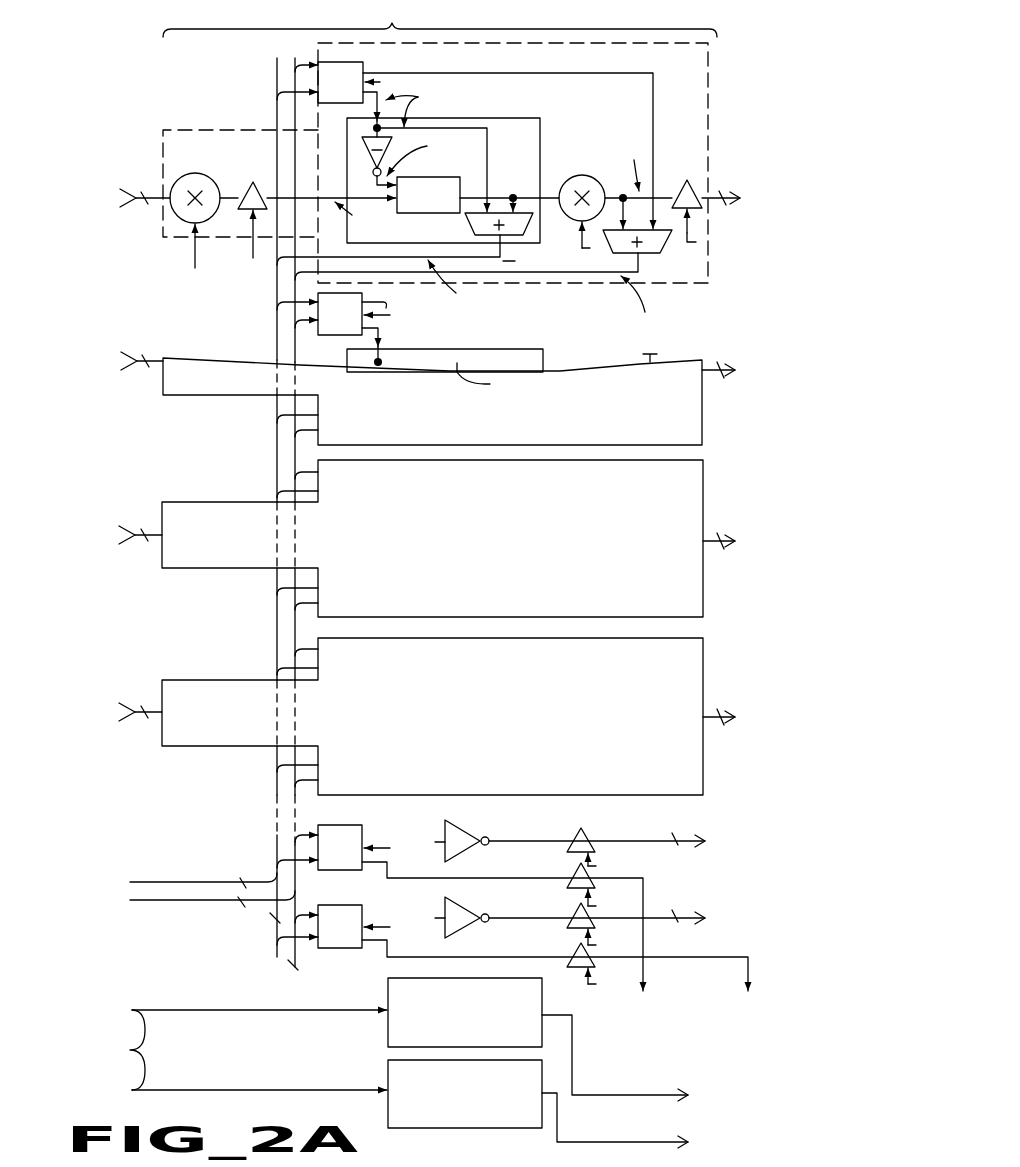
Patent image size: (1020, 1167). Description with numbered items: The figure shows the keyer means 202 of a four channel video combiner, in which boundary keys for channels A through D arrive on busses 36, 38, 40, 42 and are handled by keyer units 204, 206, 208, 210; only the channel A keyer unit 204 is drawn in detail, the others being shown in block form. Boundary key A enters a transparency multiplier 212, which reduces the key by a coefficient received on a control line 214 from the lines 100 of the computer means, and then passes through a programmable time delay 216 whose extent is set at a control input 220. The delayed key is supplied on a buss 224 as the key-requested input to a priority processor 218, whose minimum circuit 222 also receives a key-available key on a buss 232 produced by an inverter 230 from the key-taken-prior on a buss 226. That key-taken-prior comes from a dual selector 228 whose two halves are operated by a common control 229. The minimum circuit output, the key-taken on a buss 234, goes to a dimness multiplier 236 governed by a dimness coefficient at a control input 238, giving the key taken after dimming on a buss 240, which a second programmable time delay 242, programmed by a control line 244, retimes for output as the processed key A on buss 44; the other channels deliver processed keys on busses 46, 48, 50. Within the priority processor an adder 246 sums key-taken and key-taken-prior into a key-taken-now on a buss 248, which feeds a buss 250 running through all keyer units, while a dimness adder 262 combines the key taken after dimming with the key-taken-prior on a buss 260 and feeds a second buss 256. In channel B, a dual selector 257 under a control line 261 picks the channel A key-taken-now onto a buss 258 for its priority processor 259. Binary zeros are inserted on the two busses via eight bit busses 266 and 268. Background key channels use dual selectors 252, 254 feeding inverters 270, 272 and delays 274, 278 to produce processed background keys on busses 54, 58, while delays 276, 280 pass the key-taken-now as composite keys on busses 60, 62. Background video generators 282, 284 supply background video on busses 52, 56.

The buss 36 is at (138, 204).
The buss 38 is at (137, 368).
The buss 40 is at (137, 542).
The buss 42 is at (137, 719).
The buss 44 is at (718, 207).
The buss 46 is at (722, 379).
The buss 48 is at (722, 550).
The buss 50 is at (722, 726).
The buss 52 is at (672, 1092).
The buss 54 is at (622, 843).
The buss 56 is at (672, 1140).
The buss 58 is at (622, 920).
The buss 60 is at (645, 969).
The buss 62 is at (748, 972).
The lines 100 is at (233, 1040).
The keyer means 202 is at (440, 20).
The keyer unit 204 is at (712, 93).
The keyer unit 206 is at (708, 427).
The keyer unit 208 is at (708, 600).
The keyer unit 210 is at (708, 770).
The transparency multiplier 212 is at (186, 172).
The control line 214 is at (195, 257).
The programmable time delay 216 is at (250, 184).
The priority processor 218 is at (514, 116).
The control input 220 is at (253, 246).
The minimum circuit 222 is at (390, 197).
The buss 224 is at (311, 200).
The buss 226 is at (372, 131).
The dual selector 228 is at (318, 61).
The common control 229 is at (371, 56).
The inverter 230 is at (364, 149).
The buss 232 is at (380, 184).
The buss 234 is at (529, 195).
The dimness multiplier 236 is at (569, 176).
The control input 238 is at (580, 249).
The buss 240 is at (661, 192).
The programmable time delay 242 is at (687, 180).
The control line 244 is at (700, 242).
The adder 246 is at (509, 210).
The buss 248 is at (597, 273).
The buss 250 is at (276, 291).
The dual selector 252 is at (350, 824).
The dual selector 254 is at (350, 904).
The buss 256 is at (294, 299).
The dual selector 257 is at (345, 338).
The buss 258 is at (292, 322).
The priority processor 259 is at (466, 347).
The buss 260 is at (590, 74).
The control line 261 is at (393, 317).
The dimness adder 262 is at (648, 253).
The 8 bit buss 266 is at (140, 882).
The 8 bit buss 268 is at (150, 901).
The inverter 270 is at (462, 822).
The inverter 272 is at (463, 901).
The programmable time delay 274 is at (578, 828).
The programmable time delay 276 is at (577, 867).
The programmable time delay 278 is at (578, 908).
The programmable time delay 280 is at (578, 948).
The background video generator 282 is at (388, 1033).
The background video generator 284 is at (388, 1078).